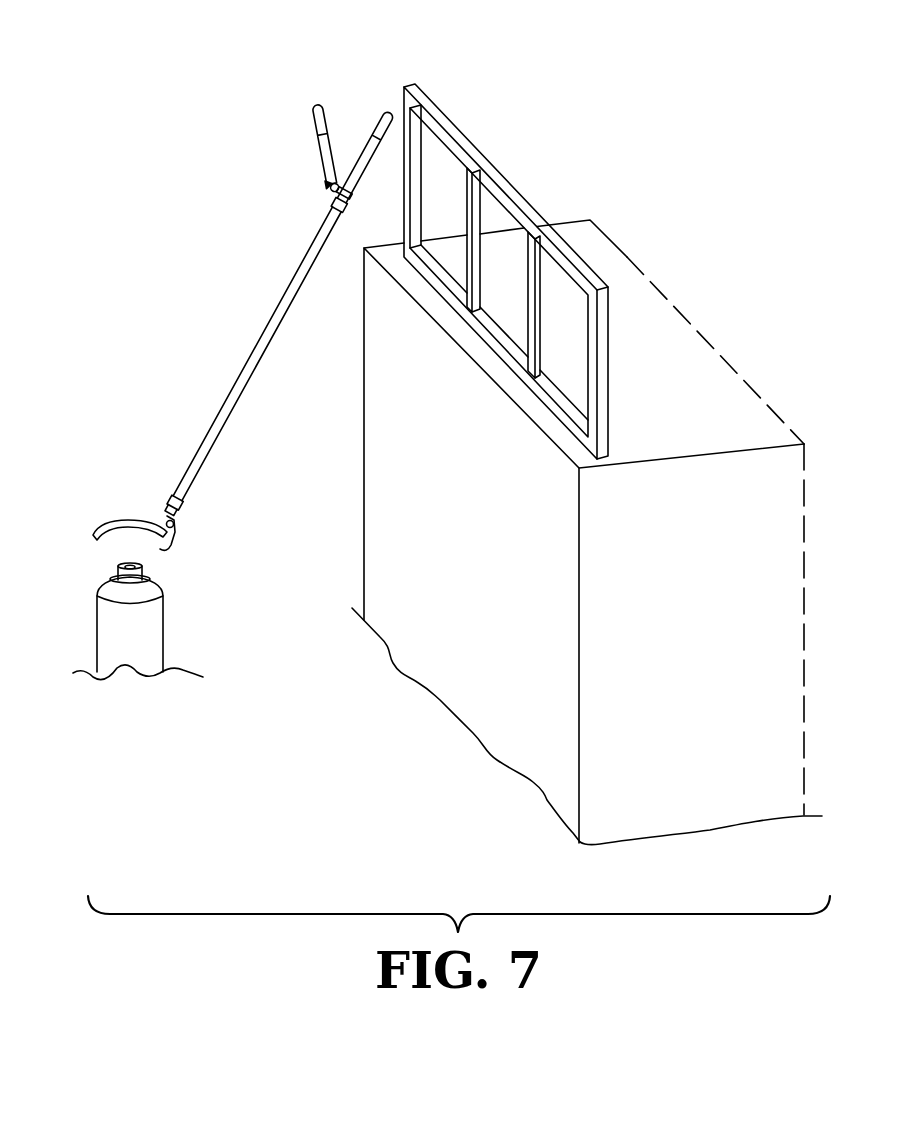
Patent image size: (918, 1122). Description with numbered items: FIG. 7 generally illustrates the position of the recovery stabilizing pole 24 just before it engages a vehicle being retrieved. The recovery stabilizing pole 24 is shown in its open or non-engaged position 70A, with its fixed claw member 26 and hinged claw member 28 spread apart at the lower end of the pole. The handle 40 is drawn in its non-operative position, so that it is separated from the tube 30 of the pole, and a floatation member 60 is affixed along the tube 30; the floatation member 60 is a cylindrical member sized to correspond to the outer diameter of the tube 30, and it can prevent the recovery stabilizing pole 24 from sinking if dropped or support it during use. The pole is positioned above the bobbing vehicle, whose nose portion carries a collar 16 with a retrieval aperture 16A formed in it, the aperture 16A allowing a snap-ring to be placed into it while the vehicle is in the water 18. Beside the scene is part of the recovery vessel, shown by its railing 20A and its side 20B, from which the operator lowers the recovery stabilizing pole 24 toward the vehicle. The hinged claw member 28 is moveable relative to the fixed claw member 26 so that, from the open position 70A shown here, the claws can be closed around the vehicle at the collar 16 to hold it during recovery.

The collar 16 is at (117, 568).
The retrieval aperture 16A is at (132, 576).
The water 18 is at (312, 765).
The railing 20A is at (483, 153).
The side 20B is at (717, 618).
The recovery stabilizing pole 24 is at (207, 252).
The fixed claw member 26 is at (104, 522).
The hinged claw member 28 is at (166, 549).
The tube 30 is at (362, 153).
The handle 40 is at (321, 169).
The floatation member 60 is at (244, 362).
The open or non-engaged position 70A is at (103, 478).